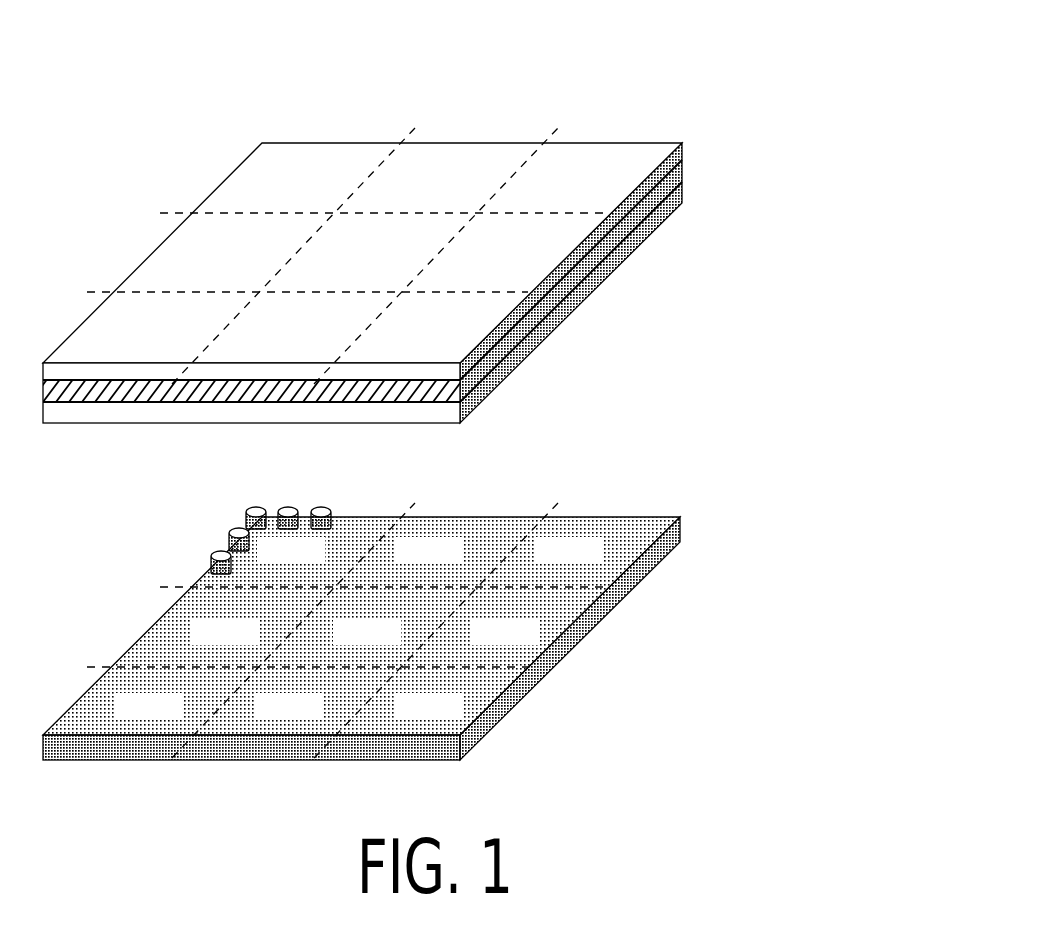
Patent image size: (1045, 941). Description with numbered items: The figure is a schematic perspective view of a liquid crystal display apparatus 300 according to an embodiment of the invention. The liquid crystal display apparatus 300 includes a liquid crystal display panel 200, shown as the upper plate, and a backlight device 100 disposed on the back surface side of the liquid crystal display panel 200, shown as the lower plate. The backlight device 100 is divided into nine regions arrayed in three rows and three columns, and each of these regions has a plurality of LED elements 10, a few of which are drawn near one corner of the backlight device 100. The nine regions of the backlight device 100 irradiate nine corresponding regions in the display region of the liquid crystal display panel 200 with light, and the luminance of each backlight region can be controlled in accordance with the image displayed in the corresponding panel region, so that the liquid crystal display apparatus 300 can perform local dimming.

The LED element 10 is at (210, 556).
The backlight device 100 is at (430, 627).
The liquid crystal display panel 200 is at (702, 222).
The liquid crystal display apparatus 300 is at (753, 92).